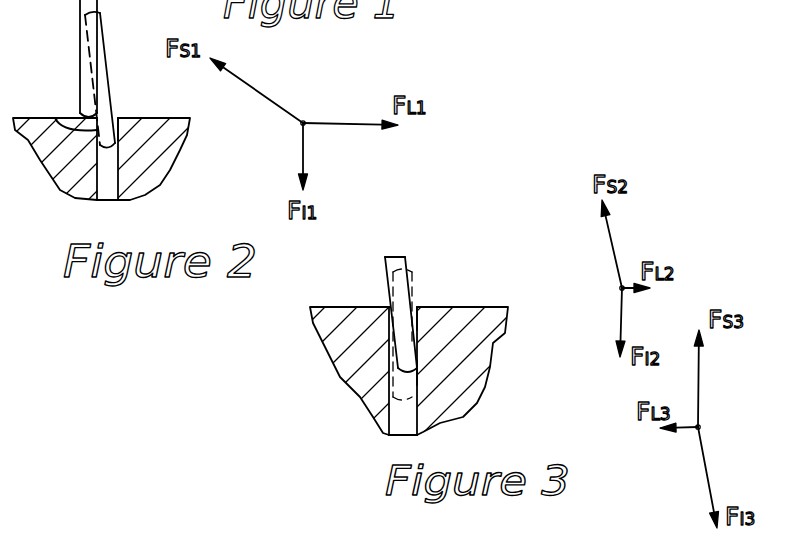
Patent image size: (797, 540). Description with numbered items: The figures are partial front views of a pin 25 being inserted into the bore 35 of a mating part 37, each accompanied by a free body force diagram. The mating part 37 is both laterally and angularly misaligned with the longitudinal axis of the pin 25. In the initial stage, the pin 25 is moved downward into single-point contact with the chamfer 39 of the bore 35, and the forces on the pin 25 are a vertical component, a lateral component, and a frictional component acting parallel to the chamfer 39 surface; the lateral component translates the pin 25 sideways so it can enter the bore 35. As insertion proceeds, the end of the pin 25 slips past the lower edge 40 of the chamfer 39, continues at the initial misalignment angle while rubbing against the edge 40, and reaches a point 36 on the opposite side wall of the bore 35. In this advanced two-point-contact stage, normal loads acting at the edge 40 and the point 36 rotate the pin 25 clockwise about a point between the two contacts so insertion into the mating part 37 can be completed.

In FIG. 2, the pin 25 is at (100, 2).
In FIG. 3, the pin 25 is at (395, 257).
In FIG. 2, the bore 35 is at (110, 190).
In FIG. 3, the bore 35 is at (402, 427).
In FIG. 3, the point on opposite side wall of bore 36 is at (432, 372).
In FIG. 2, the mating part 37 is at (172, 168).
In FIG. 3, the mating part 37 is at (355, 402).
In FIG. 2, the chamfer 39 is at (117, 118).
In FIG. 3, the chamfer 39 is at (423, 307).
In FIG. 2, the lower edge of chamfer 40 is at (55, 118).
In FIG. 3, the lower edge of chamfer 40 is at (388, 307).